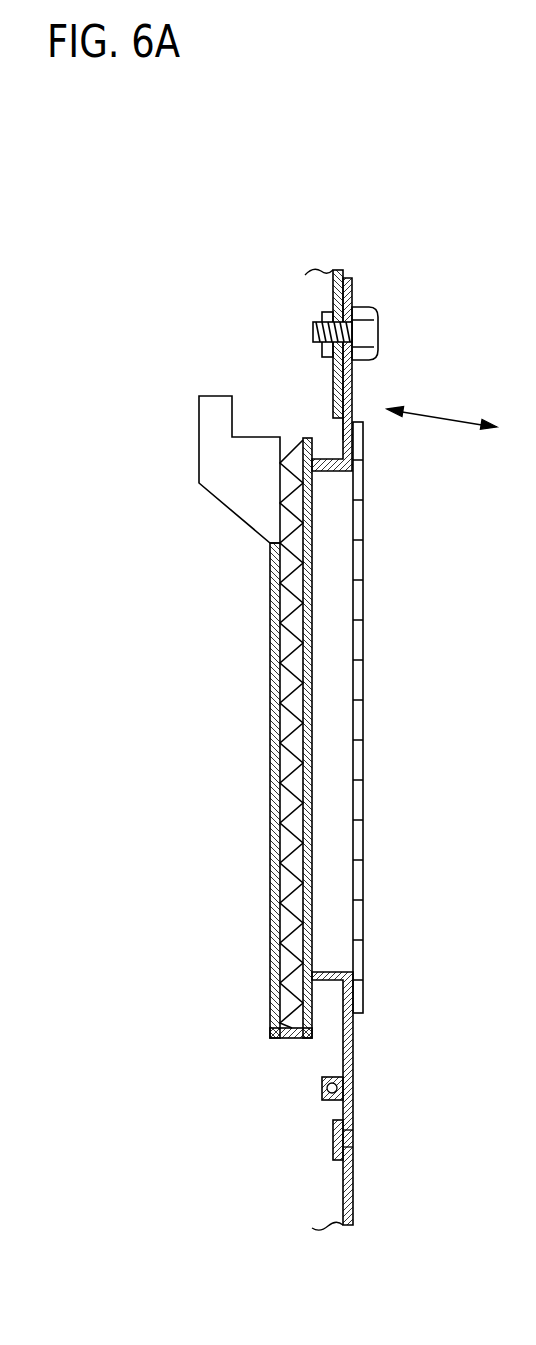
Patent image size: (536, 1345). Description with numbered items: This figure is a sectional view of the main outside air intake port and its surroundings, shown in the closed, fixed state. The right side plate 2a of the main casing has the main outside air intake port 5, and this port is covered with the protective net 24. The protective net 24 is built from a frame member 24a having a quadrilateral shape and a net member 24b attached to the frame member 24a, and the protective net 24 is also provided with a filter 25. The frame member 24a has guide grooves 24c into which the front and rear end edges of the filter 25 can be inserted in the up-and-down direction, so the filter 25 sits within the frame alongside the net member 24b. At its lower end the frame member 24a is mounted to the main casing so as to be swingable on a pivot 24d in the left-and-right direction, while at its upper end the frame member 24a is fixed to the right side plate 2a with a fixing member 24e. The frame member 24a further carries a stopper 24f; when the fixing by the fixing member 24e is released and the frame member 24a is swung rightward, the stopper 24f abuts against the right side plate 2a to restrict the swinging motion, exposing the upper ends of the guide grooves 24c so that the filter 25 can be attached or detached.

The right side plate 2a is at (333, 287).
The main outside air intake port 5 is at (338, 427).
The protective net 24 is at (301, 754).
The frame member 24a is at (352, 383).
The net member 24b is at (363, 681).
The guide grooves 24c is at (270, 757).
The pivot 24d is at (322, 1086).
The fixing member 24e is at (378, 318).
The stopper 24f is at (212, 447).
The filter 25 is at (290, 638).